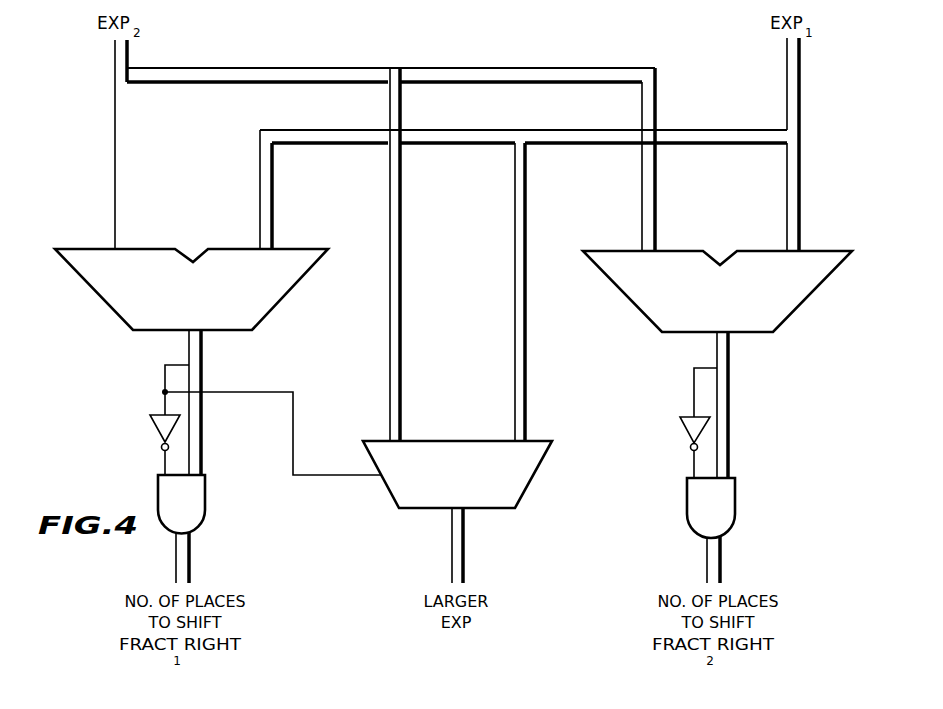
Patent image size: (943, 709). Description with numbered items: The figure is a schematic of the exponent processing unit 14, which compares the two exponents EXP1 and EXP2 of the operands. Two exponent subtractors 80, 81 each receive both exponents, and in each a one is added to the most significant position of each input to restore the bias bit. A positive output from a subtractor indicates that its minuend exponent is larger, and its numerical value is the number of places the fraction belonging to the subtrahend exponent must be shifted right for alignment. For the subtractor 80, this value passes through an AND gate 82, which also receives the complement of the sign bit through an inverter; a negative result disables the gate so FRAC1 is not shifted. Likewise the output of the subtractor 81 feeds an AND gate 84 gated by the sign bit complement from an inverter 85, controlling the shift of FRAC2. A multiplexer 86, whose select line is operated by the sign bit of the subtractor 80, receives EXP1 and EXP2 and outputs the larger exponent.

The exponent processing unit 14 is at (436, 58).
The exponent subtractor 80 is at (173, 244).
The exponent subtractor 81 is at (699, 245).
The AND gate 82 is at (207, 497).
The AND gate 84 is at (737, 498).
The inverter 85 is at (686, 430).
The multiplexer 86 is at (449, 440).